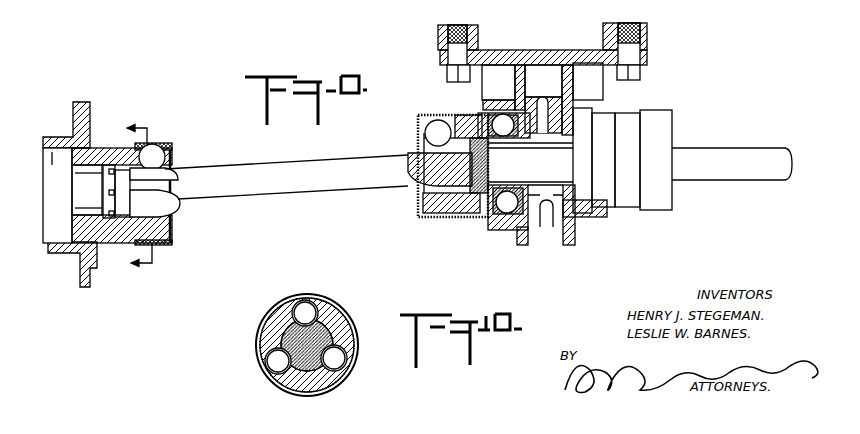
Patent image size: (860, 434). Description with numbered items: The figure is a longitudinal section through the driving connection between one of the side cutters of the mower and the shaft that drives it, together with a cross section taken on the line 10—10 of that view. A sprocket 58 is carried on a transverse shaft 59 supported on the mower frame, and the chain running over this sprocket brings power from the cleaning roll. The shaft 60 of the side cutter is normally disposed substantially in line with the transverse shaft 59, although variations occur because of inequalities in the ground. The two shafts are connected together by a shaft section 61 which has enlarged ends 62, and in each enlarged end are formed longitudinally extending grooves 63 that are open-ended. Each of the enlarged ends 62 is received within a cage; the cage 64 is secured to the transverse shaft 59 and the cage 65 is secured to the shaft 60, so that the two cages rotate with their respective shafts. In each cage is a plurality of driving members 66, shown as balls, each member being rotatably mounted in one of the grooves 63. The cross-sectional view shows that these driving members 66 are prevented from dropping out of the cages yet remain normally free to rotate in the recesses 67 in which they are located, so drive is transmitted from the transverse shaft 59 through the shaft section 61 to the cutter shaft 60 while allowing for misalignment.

In FIG. 9, the section line 10— 10 is at (147, 197).
In FIG. 9, the sprocket 58 is at (548, 118).
In FIG. 9, the transverse shaft 59 is at (500, 174).
In FIG. 9, the shaft 60 is at (62, 147).
In FIG. 9, the shaft section 61 is at (262, 172).
In FIG. 9, the enlarged ends 62 is at (168, 181).
In FIG. 10, the enlarged ends 62 is at (343, 338).
In FIG. 9, the grooves 63 is at (172, 205).
In FIG. 10, the grooves 63 is at (328, 322).
In FIG. 9, the cage 64 is at (456, 117).
In FIG. 9, the cage 65 is at (103, 148).
In FIG. 9, the driving members 66 is at (163, 148).
In FIG. 10, the driving members 66 is at (312, 302).
In FIG. 10, the recesses 67 is at (344, 358).